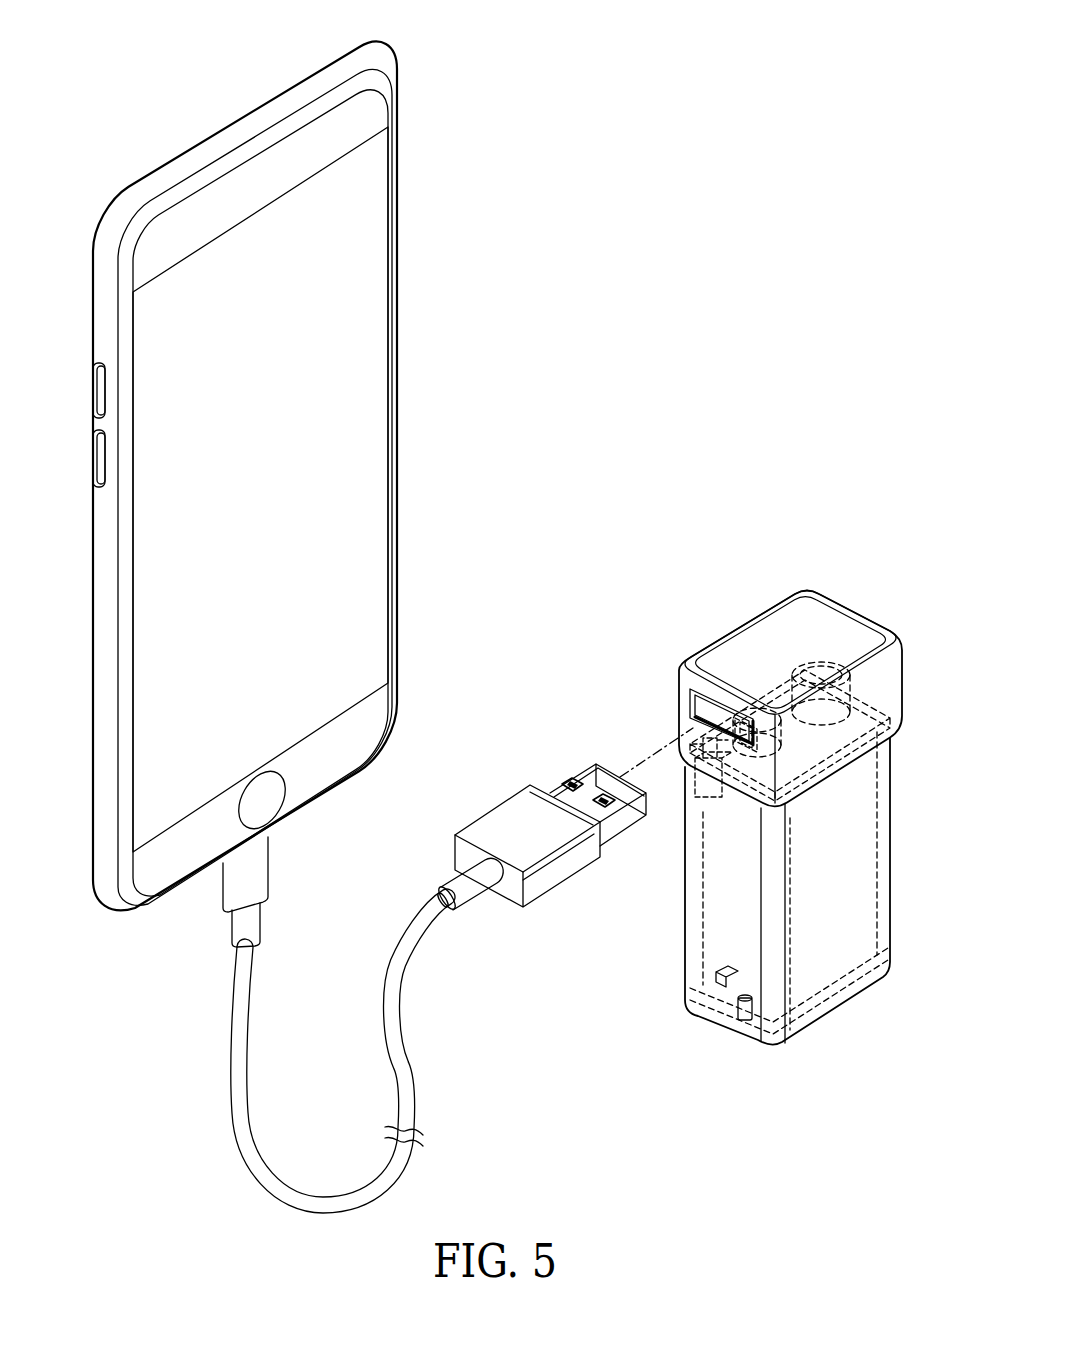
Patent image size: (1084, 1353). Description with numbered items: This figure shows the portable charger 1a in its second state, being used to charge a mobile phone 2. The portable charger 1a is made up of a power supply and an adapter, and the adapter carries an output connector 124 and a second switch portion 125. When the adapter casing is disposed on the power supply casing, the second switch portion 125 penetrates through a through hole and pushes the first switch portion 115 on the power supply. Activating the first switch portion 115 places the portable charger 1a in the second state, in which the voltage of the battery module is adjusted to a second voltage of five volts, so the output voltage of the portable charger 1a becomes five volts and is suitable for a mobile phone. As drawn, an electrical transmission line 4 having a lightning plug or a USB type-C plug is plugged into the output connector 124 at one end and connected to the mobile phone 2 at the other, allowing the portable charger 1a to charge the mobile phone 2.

The mobile phone 2 is at (362, 340).
The electrical transmission line 4 is at (407, 1070).
The portable charger 1a is at (746, 769).
The output connector 124 is at (690, 703).
The second switch portion 125 is at (715, 737).
The first switch portion 115 is at (697, 790).